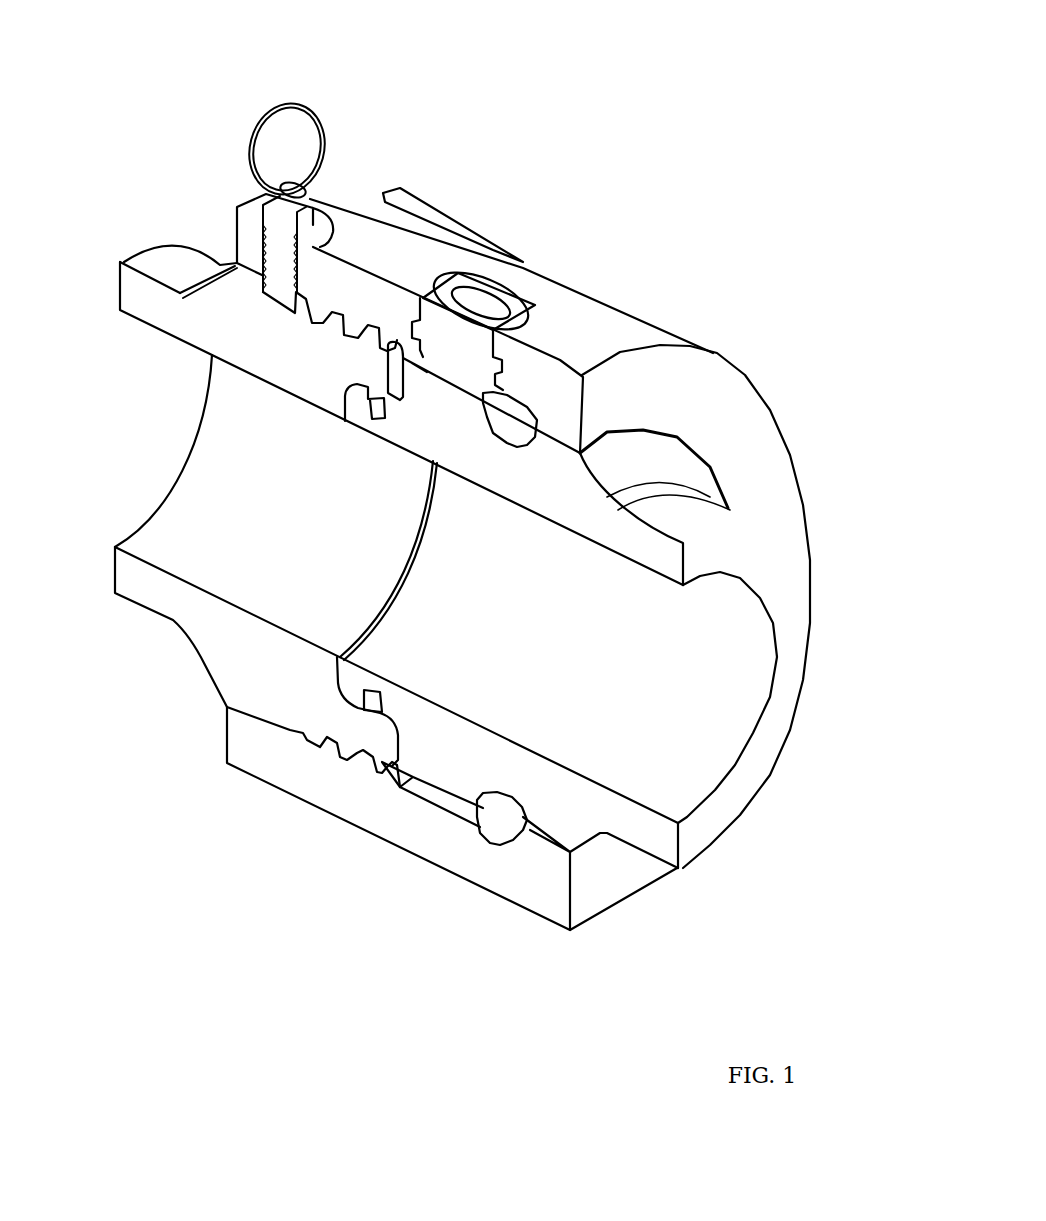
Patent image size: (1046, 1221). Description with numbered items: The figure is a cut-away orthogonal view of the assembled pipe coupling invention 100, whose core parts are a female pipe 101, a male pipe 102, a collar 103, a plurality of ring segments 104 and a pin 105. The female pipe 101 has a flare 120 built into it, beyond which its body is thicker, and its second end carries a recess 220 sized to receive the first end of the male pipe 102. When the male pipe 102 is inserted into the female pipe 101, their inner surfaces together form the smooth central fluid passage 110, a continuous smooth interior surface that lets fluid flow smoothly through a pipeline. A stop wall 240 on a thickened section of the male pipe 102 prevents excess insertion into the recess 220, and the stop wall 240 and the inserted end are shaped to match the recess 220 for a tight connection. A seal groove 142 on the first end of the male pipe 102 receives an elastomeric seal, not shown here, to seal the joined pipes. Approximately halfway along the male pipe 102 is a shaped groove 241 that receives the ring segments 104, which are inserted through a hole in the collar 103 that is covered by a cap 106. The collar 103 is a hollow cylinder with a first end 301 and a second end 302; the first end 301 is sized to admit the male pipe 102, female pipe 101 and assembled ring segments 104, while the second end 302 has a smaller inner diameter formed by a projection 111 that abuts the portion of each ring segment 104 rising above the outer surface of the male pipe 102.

The invention 100 is at (308, 888).
The female pipe 101 is at (132, 248).
The male pipe 102 is at (757, 800).
The collar 103 is at (655, 313).
The ring segments 104 is at (520, 405).
The pin 105 is at (289, 101).
The cap 106 is at (487, 285).
The smooth central fluid passage 110 is at (838, 745).
The projection 111 is at (558, 417).
The flare 120 is at (220, 266).
The seal groove 142 is at (382, 384).
The recess 220 is at (347, 705).
The stop wall 240 is at (410, 398).
The shaped groove 241 is at (528, 825).
The first end of collar 301 is at (221, 767).
The second end of collar 302 is at (582, 937).